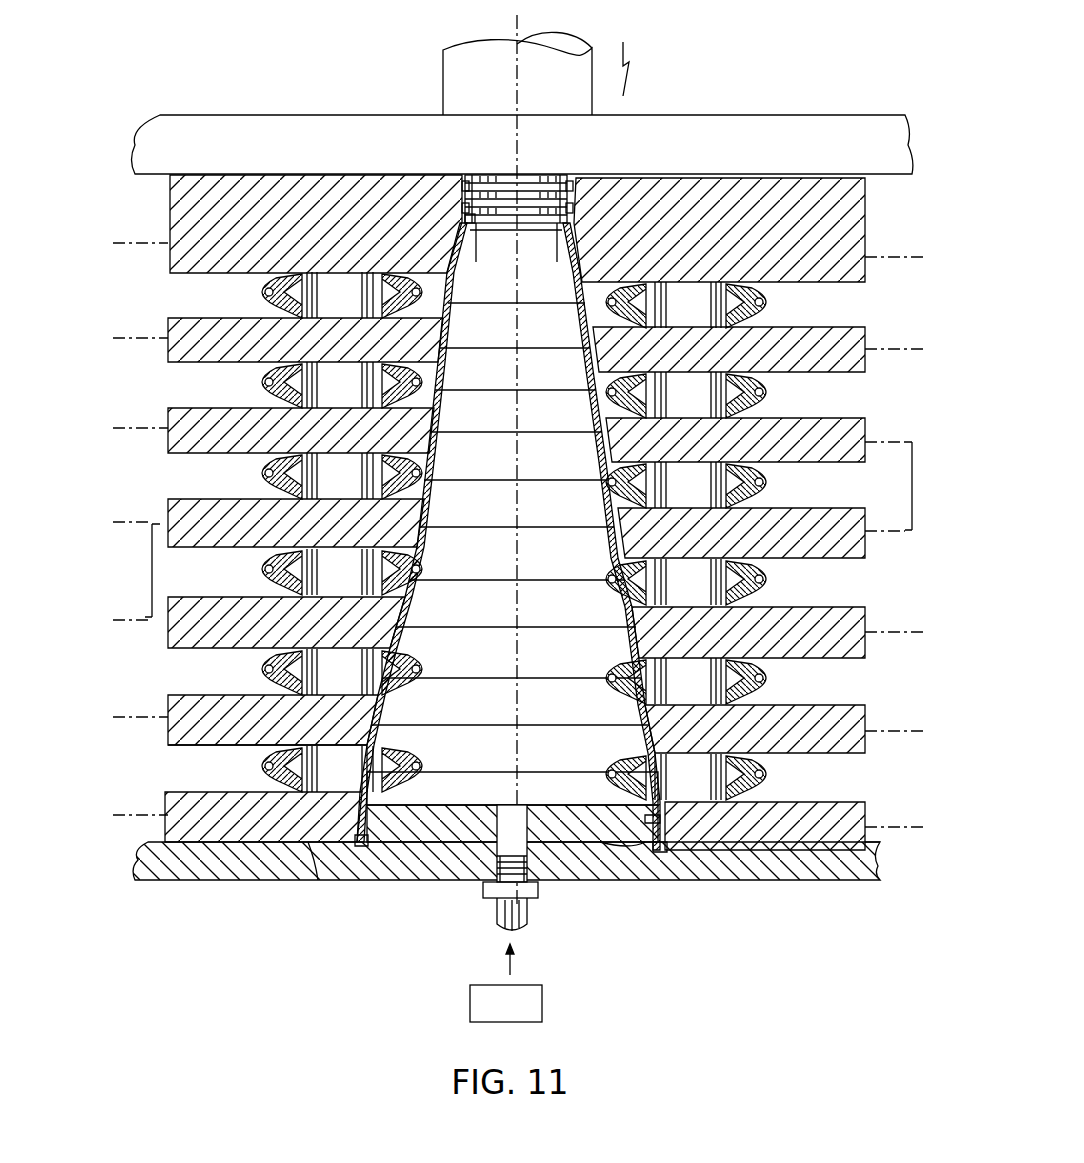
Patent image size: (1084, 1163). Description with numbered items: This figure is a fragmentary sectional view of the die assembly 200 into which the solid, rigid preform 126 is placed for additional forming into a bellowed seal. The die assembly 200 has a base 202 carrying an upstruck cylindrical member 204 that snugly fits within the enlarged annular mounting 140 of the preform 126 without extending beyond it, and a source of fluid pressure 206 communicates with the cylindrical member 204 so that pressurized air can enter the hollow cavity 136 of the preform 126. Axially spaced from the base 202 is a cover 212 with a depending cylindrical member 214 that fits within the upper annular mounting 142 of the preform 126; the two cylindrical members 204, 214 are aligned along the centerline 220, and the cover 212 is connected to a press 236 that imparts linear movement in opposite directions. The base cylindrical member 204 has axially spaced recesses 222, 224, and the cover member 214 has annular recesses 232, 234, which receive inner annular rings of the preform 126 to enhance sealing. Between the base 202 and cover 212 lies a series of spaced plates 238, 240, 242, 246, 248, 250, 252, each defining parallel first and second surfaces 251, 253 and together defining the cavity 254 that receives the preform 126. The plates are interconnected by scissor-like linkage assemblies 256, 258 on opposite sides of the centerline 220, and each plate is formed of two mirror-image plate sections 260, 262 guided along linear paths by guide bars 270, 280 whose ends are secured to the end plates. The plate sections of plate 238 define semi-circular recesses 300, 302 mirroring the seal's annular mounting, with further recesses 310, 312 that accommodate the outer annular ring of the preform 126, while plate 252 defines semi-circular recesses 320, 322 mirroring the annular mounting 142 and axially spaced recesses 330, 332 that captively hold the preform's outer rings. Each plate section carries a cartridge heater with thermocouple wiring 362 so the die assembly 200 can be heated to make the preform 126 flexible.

The preform 126 is at (632, 277).
The hollow cavity 136 is at (458, 300).
The annular mounting 140 is at (313, 855).
The annular mounting 142 is at (468, 218).
The die assembly 200 is at (714, 90).
The base 202 is at (790, 880).
The cylindrical member 204 is at (563, 835).
The source of fluid pressure 206 is at (470, 1003).
The cover 212 is at (840, 132).
The cylindrical member 214 is at (524, 182).
The centerline 220 is at (527, 32).
The recess 222 is at (650, 823).
The recess 224 is at (622, 845).
The annular recess 232 is at (505, 190).
The annular recess 234 is at (523, 224).
The press 236 is at (427, 102).
The plate 238 is at (790, 815).
The plate 240 is at (818, 715).
The plate 242 is at (825, 622).
The plate 246 is at (815, 522).
The plate 248 is at (828, 430).
The plate 250 is at (846, 346).
The first surface 251 is at (182, 700).
The plate 252 is at (845, 250).
The second surface 253 is at (180, 745).
The cavity 254 is at (576, 300).
The linkage assembly 256 is at (247, 292).
The linkage assembly 258 is at (784, 299).
The plate section 260 is at (172, 805).
The plate section 262 is at (865, 843).
The guide bar 270 is at (330, 478).
The guide bar 280 is at (690, 492).
The semi-circular recess 300 is at (403, 872).
The semi-circular recess 302 is at (620, 798).
The semi-circular recess 310 is at (378, 860).
The semi-circular recess 312 is at (662, 853).
The semi-circular recess 320 is at (468, 183).
The semi-circular recess 322 is at (568, 182).
The semi-circular recess 330 is at (587, 244).
The semi-circular recess 332 is at (464, 205).
The thermocouple wiring 362 is at (531, 529).